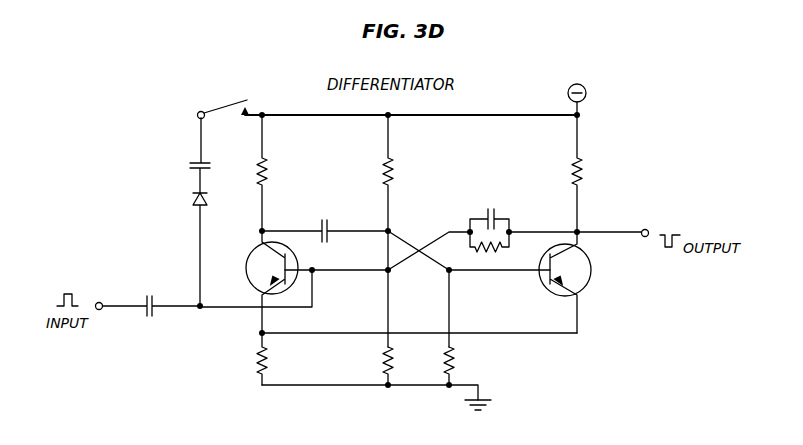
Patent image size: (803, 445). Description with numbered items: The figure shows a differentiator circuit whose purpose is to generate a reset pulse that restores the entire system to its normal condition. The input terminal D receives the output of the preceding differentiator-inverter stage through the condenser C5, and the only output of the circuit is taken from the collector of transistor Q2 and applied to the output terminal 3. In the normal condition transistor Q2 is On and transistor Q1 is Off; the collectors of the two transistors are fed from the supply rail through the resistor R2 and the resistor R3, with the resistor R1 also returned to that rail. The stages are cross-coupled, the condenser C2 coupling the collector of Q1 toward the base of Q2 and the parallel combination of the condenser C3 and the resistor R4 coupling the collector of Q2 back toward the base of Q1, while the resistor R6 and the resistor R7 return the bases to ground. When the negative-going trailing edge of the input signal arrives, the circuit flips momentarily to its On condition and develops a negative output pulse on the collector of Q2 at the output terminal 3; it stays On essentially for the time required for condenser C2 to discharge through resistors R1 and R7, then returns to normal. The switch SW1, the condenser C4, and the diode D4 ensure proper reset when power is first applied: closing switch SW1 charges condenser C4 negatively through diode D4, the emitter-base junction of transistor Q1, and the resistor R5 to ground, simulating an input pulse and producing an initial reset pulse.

The switch SW1 is at (224, 101).
The condenser C4 is at (186, 155).
The diode D4 is at (190, 198).
The resistor R2 is at (275, 173).
The resistor R1 is at (401, 173).
The resistor R3 is at (590, 173).
The condenser C2 is at (325, 228).
The condenser C3 is at (489, 212).
The resistor R4 is at (489, 250).
The output terminal 3 is at (644, 245).
The transistor Q1 is at (250, 278).
The transistor Q2 is at (532, 282).
The input terminal D is at (97, 297).
The condenser C5 is at (151, 296).
The resistor R5 is at (270, 358).
The resistor R6 is at (379, 357).
The resistor R7 is at (461, 366).